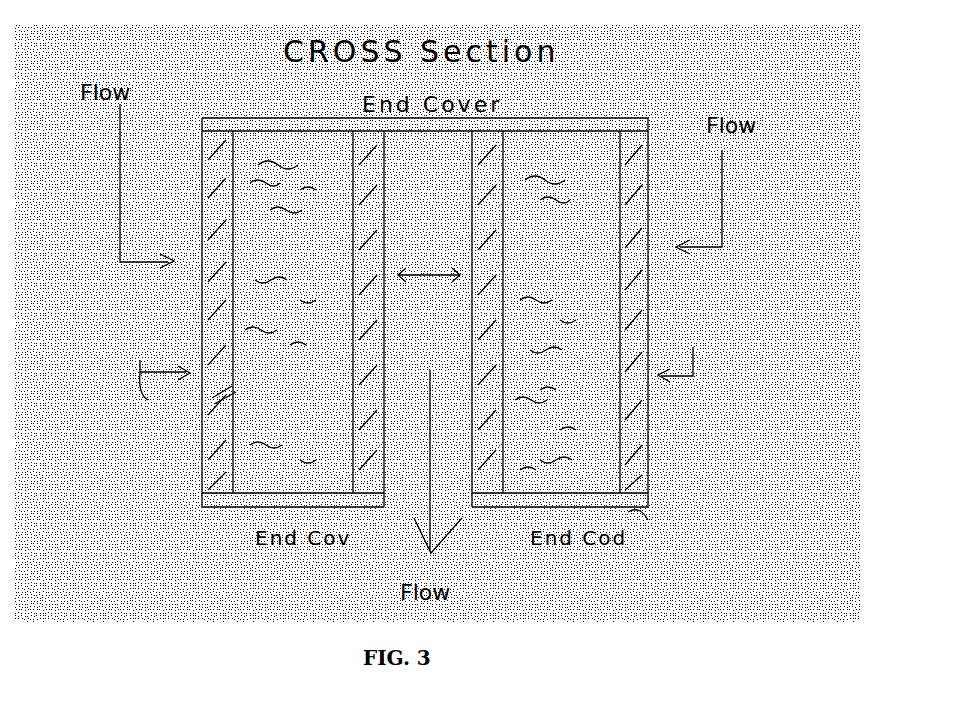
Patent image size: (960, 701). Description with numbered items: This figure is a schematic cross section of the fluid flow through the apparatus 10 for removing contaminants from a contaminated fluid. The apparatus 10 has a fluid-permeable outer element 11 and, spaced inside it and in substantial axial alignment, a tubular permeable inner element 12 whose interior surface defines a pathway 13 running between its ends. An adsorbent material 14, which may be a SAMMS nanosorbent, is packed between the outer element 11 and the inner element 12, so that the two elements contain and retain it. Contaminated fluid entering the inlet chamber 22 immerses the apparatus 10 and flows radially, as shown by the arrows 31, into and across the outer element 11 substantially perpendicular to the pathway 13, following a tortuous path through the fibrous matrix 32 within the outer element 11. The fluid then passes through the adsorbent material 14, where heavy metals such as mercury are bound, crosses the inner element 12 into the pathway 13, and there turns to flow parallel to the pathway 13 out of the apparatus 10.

The apparatus 10 is at (632, 82).
The outer element 11 is at (200, 441).
The inner element 12 is at (390, 228).
The pathway 13 is at (435, 348).
The adsorbent material 14 is at (212, 305).
The inlet chamber 22 is at (419, 315).
The arrows 31 is at (122, 172).
The fibrous matrix 32 is at (222, 386).